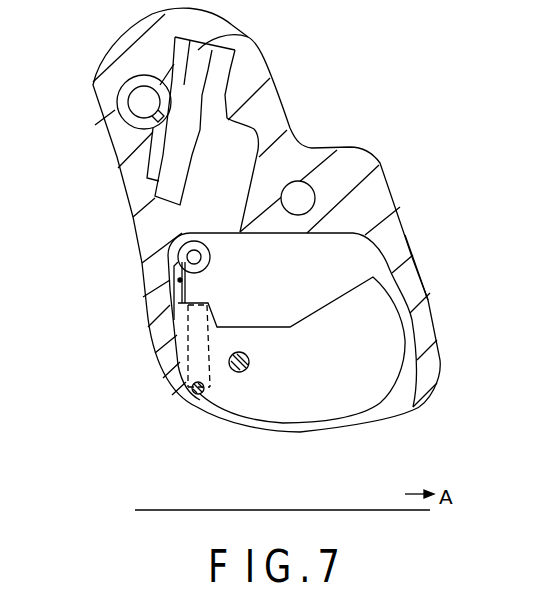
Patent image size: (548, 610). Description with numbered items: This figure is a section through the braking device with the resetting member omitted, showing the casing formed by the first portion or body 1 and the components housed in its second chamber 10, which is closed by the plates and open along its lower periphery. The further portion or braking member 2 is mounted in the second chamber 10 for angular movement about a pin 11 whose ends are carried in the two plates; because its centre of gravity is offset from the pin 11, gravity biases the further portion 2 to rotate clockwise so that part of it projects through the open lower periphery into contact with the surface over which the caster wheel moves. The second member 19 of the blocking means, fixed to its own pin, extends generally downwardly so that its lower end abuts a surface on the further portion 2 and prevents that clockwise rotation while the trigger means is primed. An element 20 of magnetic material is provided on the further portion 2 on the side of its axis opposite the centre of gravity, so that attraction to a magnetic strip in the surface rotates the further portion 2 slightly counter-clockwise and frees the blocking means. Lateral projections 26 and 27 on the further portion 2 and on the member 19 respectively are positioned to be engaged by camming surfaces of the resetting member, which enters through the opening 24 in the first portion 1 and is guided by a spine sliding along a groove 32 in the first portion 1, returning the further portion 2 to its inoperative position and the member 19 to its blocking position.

The first portion 1 is at (358, 165).
The further portion 2 is at (383, 357).
The second chamber 10 is at (367, 260).
The pin 11 is at (249, 357).
The second member 19 is at (178, 278).
The element of magnetic material 20 is at (170, 350).
The opening 24 is at (143, 105).
The lateral projection 26 is at (198, 394).
The lateral projection 27 is at (170, 309).
The groove 32 is at (240, 32).